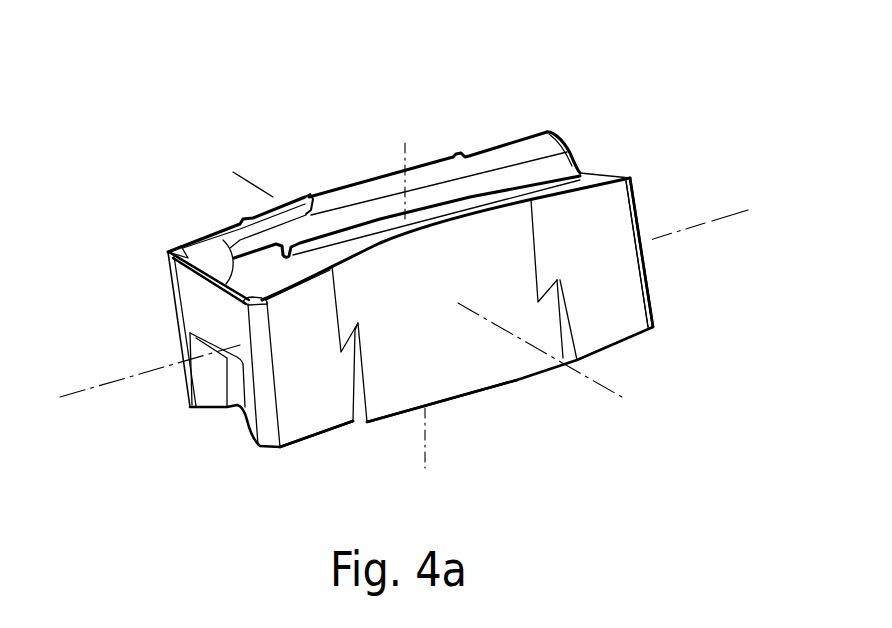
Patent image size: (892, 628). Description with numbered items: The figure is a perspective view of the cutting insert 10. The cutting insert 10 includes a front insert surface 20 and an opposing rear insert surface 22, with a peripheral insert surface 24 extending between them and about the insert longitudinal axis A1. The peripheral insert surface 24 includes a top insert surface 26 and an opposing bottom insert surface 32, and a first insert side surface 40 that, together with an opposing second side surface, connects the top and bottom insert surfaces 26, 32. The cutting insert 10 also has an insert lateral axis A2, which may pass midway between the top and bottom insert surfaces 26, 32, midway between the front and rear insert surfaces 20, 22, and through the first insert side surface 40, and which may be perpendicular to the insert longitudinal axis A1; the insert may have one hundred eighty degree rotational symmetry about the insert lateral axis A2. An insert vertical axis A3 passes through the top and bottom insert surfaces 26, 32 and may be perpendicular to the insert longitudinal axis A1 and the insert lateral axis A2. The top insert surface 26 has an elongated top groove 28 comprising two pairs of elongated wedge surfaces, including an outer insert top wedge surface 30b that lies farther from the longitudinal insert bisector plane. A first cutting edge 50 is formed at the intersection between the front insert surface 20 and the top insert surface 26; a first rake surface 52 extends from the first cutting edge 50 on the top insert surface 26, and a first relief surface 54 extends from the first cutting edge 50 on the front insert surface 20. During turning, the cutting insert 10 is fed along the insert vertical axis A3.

The cutting insert 10 is at (156, 126).
The front insert surface 20 is at (165, 403).
The rear insert surface 22 is at (656, 186).
The peripheral insert surface 24 is at (426, 149).
The top insert surface 26 is at (358, 156).
The elongated top groove 28 is at (588, 135).
The insert top wedge surface 30b is at (504, 160).
The bottom insert surface 32 is at (344, 447).
The first insert side surface 40 is at (423, 392).
The first cutting edge 50 is at (175, 250).
The first rake surface 52 is at (190, 246).
The first relief surface 54 is at (197, 307).
The insert longitudinal axis A1 is at (712, 220).
The insert lateral axis A2 is at (243, 181).
The insert vertical axis A3 is at (402, 150).